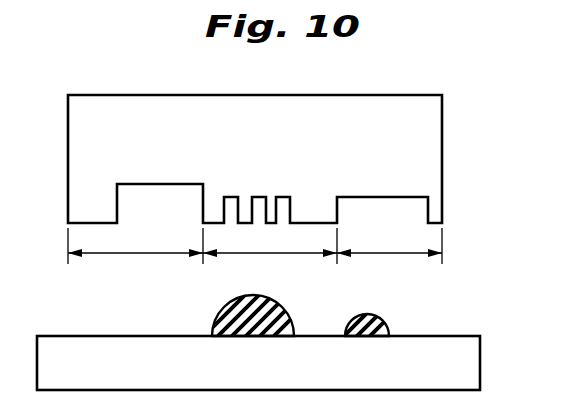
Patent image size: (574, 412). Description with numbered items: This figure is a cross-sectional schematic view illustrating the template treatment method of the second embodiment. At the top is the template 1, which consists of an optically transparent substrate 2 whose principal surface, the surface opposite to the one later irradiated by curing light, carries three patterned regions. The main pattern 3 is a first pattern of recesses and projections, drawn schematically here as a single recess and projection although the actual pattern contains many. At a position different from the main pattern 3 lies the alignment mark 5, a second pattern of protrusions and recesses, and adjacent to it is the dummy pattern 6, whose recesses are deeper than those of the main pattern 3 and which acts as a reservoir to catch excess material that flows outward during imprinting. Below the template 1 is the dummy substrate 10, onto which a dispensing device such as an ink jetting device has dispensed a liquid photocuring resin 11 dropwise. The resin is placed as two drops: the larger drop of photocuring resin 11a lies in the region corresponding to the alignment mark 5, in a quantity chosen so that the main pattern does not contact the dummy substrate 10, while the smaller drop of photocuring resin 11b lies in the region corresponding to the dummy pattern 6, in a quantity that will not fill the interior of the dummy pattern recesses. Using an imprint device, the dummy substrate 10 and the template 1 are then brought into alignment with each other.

The template 1 is at (272, 139).
The optically transparent substrate 2 is at (433, 147).
The main pattern 3 is at (135, 256).
The alignment mark 5 is at (270, 256).
The dummy pattern 6 is at (389, 256).
The dummy substrate 10 is at (470, 363).
The photocuring resin 11 is at (298, 315).
The photocuring resin 11a is at (230, 306).
The photocuring resin 11b is at (371, 318).